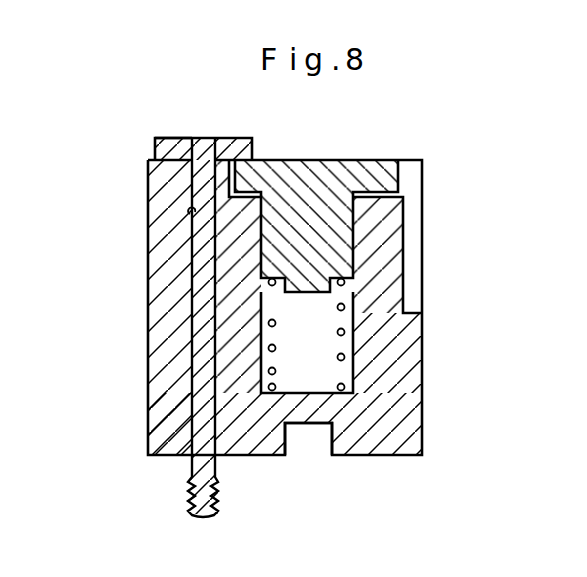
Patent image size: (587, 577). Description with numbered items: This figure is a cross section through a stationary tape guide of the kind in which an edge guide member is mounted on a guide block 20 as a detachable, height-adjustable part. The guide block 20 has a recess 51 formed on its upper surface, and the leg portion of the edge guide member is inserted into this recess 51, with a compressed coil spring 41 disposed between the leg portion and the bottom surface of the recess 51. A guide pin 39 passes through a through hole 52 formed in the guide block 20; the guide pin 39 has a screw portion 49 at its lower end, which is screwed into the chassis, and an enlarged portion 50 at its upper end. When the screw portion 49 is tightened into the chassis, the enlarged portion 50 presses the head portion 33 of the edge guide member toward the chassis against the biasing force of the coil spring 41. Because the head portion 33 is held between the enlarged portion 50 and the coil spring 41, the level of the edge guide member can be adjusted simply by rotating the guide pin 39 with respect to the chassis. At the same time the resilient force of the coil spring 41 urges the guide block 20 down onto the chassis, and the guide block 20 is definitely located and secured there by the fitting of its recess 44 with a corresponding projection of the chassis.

The guide block 20 is at (140, 315).
The head portion 33 is at (378, 161).
The guide pin 39 is at (202, 127).
The compressed coil spring 41 is at (347, 333).
The recess 44 is at (313, 447).
The screw portion 49 is at (223, 498).
The enlarged portion 50 is at (142, 138).
The recess 51 is at (346, 318).
The through hole 52 is at (192, 214).